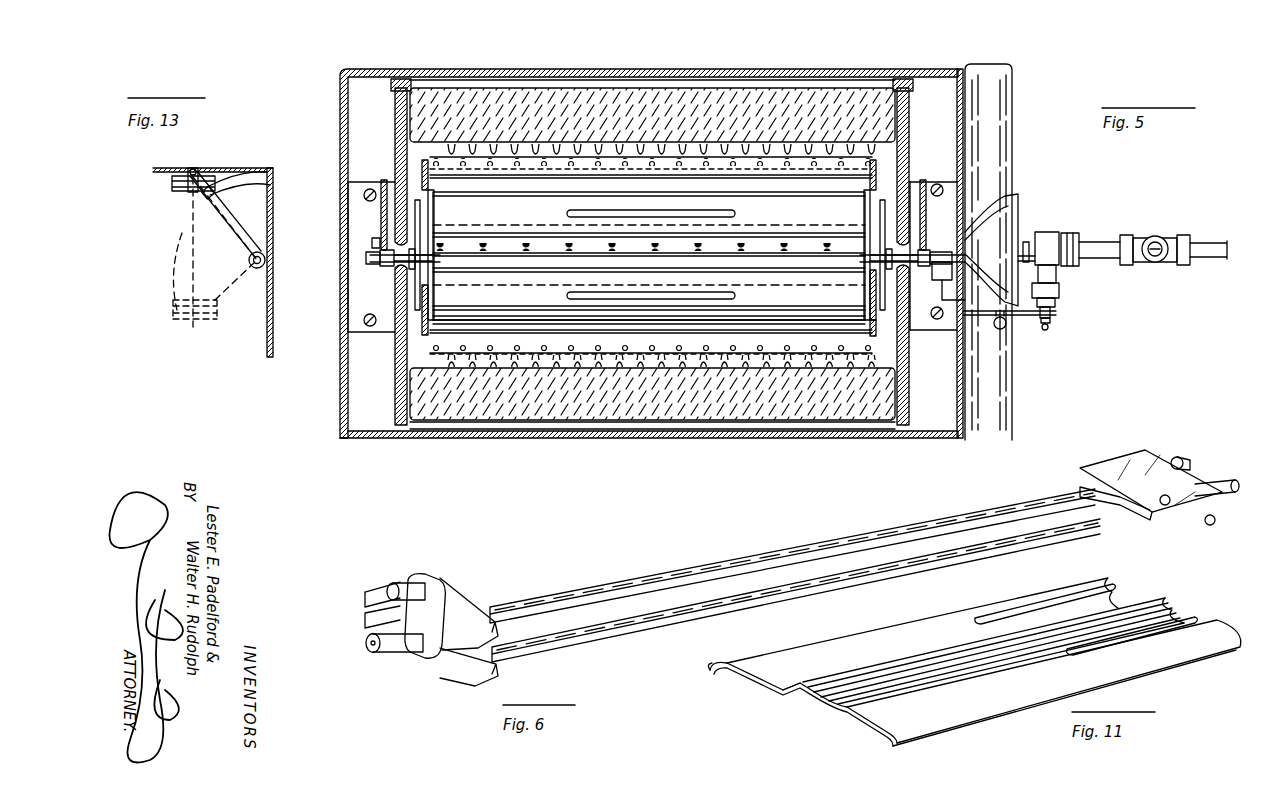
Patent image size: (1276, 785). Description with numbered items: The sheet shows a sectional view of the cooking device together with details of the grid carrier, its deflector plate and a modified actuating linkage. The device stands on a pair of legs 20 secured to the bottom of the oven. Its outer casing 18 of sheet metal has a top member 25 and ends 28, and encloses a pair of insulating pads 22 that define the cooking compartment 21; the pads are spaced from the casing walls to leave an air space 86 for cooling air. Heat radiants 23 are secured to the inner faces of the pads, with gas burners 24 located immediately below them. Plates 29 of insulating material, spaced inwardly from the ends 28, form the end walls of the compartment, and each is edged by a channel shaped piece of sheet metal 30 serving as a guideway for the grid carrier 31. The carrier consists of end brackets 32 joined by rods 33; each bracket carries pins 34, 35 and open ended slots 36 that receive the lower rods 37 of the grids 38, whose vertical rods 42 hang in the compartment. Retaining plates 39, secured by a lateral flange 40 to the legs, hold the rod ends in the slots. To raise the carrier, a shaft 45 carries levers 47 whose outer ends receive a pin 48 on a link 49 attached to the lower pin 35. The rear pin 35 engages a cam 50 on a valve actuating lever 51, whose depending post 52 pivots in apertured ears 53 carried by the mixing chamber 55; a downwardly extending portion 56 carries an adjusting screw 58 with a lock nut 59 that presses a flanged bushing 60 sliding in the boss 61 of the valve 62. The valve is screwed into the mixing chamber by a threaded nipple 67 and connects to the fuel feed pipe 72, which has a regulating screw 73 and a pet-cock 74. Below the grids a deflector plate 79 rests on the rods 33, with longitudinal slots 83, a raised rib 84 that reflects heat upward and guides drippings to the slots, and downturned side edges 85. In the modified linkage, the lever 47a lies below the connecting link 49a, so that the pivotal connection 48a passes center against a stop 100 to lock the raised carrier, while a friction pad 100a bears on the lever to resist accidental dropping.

In FIG. 5, the outer casing 18 is at (494, 71).
In FIG. 13, the outer casing 18 is at (274, 290).
In FIG. 5, the legs 20 is at (990, 440).
In FIG. 5, the cooking compartment 21 is at (345, 340).
In FIG. 5, the insulating pads 22 is at (655, 100).
In FIG. 5, the heat radiants 23 is at (714, 142).
In FIG. 5, the gas burners 24 is at (588, 152).
In FIG. 13, the top member 25 is at (262, 160).
In FIG. 5, the ends of the casing 28 is at (345, 196).
In FIG. 5, the plates 29 is at (395, 362).
In FIG. 5, the channel shaped piece of sheet metal 30 is at (392, 270).
In FIG. 13, the channel shaped piece of sheet metal 30 is at (196, 262).
In FIG. 6, the grid carrier 31 is at (796, 590).
In FIG. 5, the end brackets 32 is at (434, 216).
In FIG. 13, the end brackets 32 is at (178, 190).
In FIG. 6, the end brackets 32 is at (448, 598).
In FIG. 5, the rods 33 is at (803, 228).
In FIG. 6, the rods 33 is at (808, 575).
In FIG. 5, the pin 34 is at (382, 262).
In FIG. 13, the pin 34 is at (192, 170).
In FIG. 6, the pin 34 is at (402, 585).
In FIG. 5, the pin 35 is at (366, 256).
In FIG. 6, the pin 35 is at (392, 652).
In FIG. 6, the slots 36 is at (365, 607).
In FIG. 5, the lower rods 37 is at (415, 280).
In FIG. 5, the grids 38 is at (735, 248).
In FIG. 5, the retaining plates 39 is at (422, 170).
In FIG. 5, the lateral flange 40 is at (422, 318).
In FIG. 5, the vertical rods 42 is at (560, 284).
In FIG. 13, the shaft 45 is at (266, 258).
In FIG. 5, the levers 47 is at (380, 200).
In FIG. 13, the lever 47a is at (242, 215).
In FIG. 5, the pin 48 is at (372, 242).
In FIG. 13, the pivotal connection 48a is at (208, 200).
In FIG. 5, the link 49 is at (385, 230).
In FIG. 13, the connecting link 49a is at (196, 172).
In FIG. 5, the cam 50 is at (940, 282).
In FIG. 5, the valve actuating lever 51 is at (958, 305).
In FIG. 5, the depending post 52 is at (1012, 330).
In FIG. 5, the apertured ears 53 is at (1000, 330).
In FIG. 5, the mixing chamber 55 is at (991, 250).
In FIG. 5, the downwardly extending portion 56 is at (1052, 312).
In FIG. 5, the adjusting screw 58 is at (1050, 329).
In FIG. 5, the lock nut 59 is at (1052, 320).
In FIG. 5, the flanged bushing 60 is at (1056, 302).
In FIG. 5, the boss 61 is at (1060, 288).
In FIG. 5, the valve 62 is at (1047, 238).
In FIG. 5, the threaded nipple 67 is at (1026, 242).
In FIG. 5, the fuel feed pipe 72 is at (1100, 244).
In FIG. 5, the regulating screw 73 is at (1100, 258).
In FIG. 5, the pet-cock 74 is at (1158, 236).
In FIG. 5, the deflector plate 79 is at (649, 256).
In FIG. 11, the deflector plate 79 is at (975, 662).
In FIG. 5, the longitudinal slots 83 is at (630, 292).
In FIG. 11, the longitudinal slots 83 is at (1165, 620).
In FIG. 5, the raised rib 84 is at (763, 255).
In FIG. 11, the raised rib 84 is at (940, 650).
In FIG. 5, the downturned side edges 85 is at (533, 320).
In FIG. 11, the downturned side edges 85 is at (895, 746).
In FIG. 5, the air space 86 is at (810, 80).
In FIG. 13, the stop 100 is at (268, 172).
In FIG. 13, the friction pad 100a is at (272, 184).